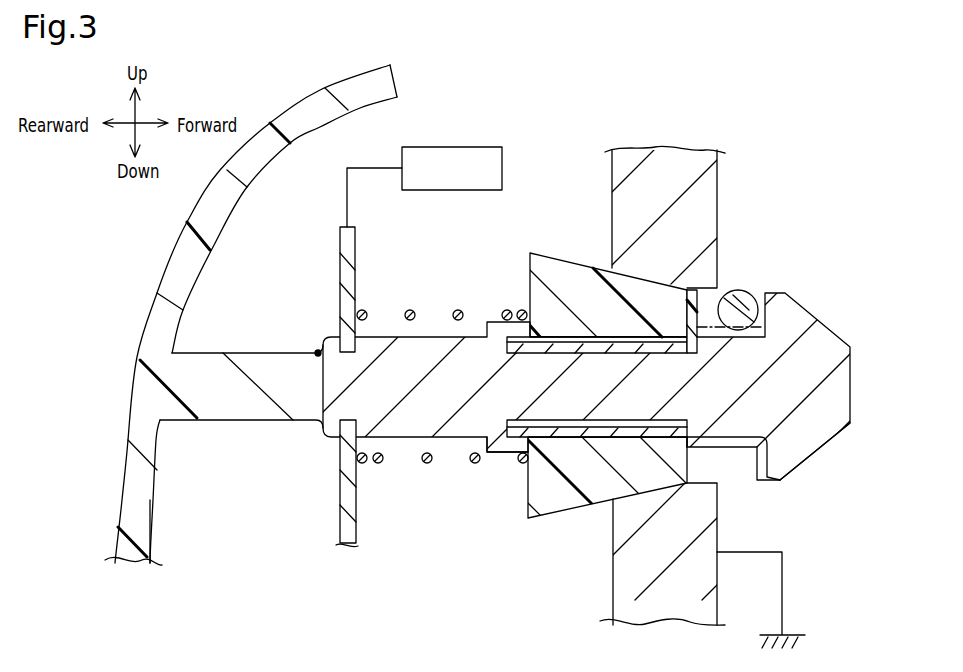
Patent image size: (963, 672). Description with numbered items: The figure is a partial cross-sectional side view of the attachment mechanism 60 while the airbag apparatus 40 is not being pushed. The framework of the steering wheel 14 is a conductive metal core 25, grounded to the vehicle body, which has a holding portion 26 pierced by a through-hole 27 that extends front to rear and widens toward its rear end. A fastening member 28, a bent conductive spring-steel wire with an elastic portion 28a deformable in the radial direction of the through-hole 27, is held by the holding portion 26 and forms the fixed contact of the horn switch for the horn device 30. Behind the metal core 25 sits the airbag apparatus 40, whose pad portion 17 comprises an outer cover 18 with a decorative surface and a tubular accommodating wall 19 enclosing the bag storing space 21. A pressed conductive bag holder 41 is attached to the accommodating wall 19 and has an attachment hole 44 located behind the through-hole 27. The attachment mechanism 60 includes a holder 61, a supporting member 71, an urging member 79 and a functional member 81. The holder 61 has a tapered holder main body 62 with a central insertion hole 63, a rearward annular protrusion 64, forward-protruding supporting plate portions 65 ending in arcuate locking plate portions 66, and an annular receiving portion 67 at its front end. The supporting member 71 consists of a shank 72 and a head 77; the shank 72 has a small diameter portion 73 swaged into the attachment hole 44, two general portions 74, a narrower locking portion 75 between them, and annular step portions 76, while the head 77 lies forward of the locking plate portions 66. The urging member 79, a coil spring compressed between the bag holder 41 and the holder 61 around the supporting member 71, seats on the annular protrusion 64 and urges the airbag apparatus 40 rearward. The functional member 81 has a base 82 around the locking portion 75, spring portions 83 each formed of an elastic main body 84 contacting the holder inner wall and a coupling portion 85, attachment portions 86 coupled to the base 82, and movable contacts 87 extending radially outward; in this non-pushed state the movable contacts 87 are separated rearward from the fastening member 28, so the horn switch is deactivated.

The pad portion 17 is at (173, 270).
The outer cover 18 is at (247, 315).
The accommodating wall 19 is at (193, 357).
The bag storing space 21 is at (158, 432).
The holding portion 26 is at (727, 152).
The steering wheel 14 is at (727, 152).
The metal core 25 is at (688, 150).
The through-hole 27 is at (600, 290).
The fastening member 28 is at (738, 300).
The elastic portion 28a is at (752, 290).
The horn device 30 is at (455, 147).
The airbag apparatus 40 is at (340, 237).
The bag holder 41 is at (335, 260).
The attachment hole 44 is at (315, 350).
The attachment mechanism 60 is at (560, 511).
The holder 61 is at (530, 253).
The holder main body 62 is at (607, 245).
The insertion hole 63 is at (492, 440).
The annular protrusion 64 is at (517, 330).
The supporting plate portion 65 is at (738, 430).
The locking plate portion 66 is at (797, 457).
The receiving portion 67 is at (702, 472).
The supporting member 71 is at (833, 295).
The shank 72 is at (549, 412).
The small diameter portion 73 is at (342, 453).
The general portion 74 is at (549, 412).
The locking portion 75 is at (566, 472).
The step portion 76 is at (483, 365).
The head 77 is at (549, 412).
The urging member 79 is at (378, 468).
The functional member 81 is at (690, 293).
The base 82 is at (670, 418).
The spring portion 83 is at (606, 504).
The elastic main body 84 is at (565, 445).
The coupling portion 85 is at (600, 420).
The attachment portion 86 is at (648, 350).
The movable contact 87 is at (743, 270).